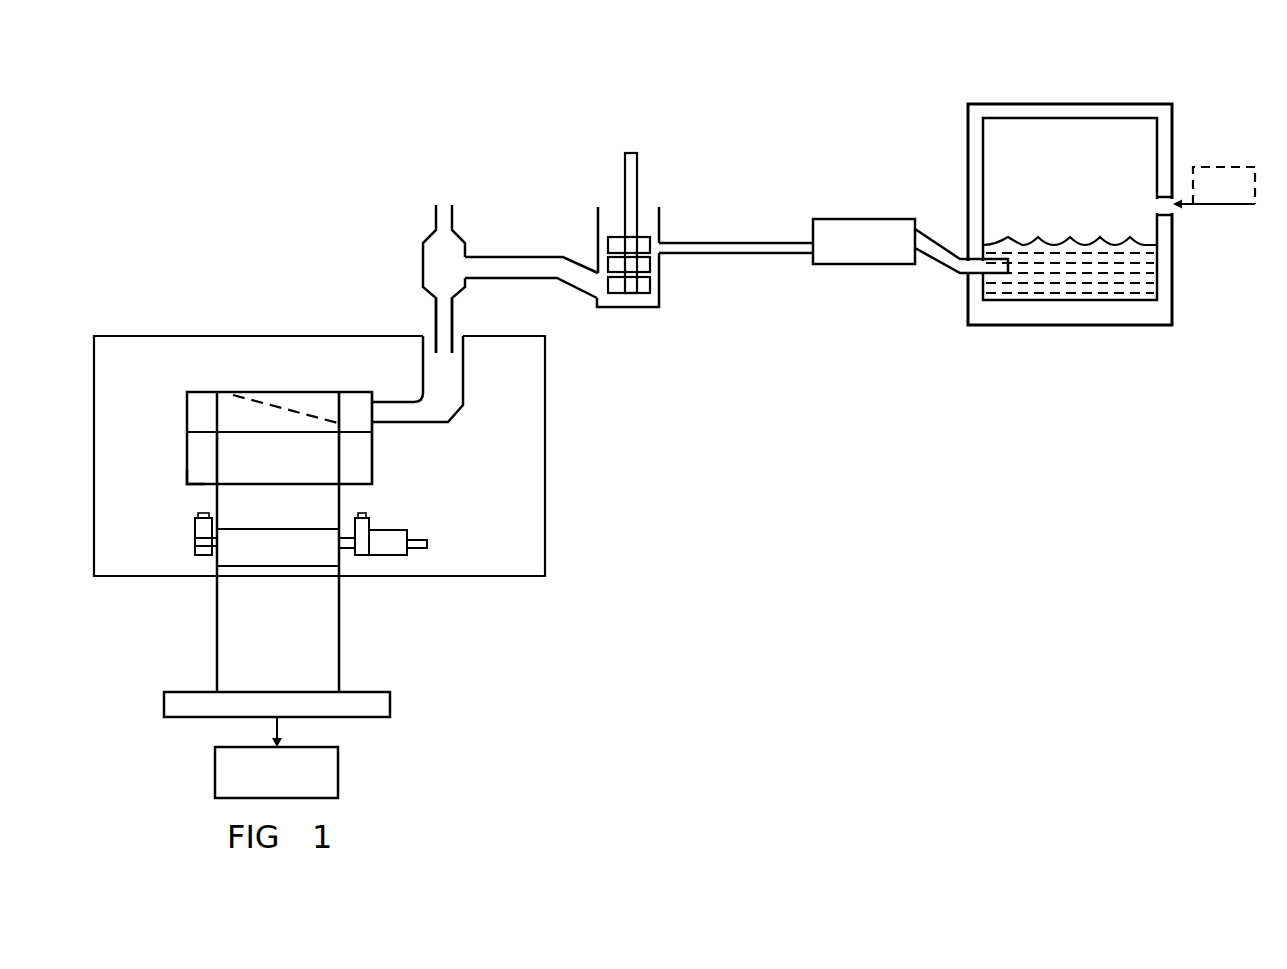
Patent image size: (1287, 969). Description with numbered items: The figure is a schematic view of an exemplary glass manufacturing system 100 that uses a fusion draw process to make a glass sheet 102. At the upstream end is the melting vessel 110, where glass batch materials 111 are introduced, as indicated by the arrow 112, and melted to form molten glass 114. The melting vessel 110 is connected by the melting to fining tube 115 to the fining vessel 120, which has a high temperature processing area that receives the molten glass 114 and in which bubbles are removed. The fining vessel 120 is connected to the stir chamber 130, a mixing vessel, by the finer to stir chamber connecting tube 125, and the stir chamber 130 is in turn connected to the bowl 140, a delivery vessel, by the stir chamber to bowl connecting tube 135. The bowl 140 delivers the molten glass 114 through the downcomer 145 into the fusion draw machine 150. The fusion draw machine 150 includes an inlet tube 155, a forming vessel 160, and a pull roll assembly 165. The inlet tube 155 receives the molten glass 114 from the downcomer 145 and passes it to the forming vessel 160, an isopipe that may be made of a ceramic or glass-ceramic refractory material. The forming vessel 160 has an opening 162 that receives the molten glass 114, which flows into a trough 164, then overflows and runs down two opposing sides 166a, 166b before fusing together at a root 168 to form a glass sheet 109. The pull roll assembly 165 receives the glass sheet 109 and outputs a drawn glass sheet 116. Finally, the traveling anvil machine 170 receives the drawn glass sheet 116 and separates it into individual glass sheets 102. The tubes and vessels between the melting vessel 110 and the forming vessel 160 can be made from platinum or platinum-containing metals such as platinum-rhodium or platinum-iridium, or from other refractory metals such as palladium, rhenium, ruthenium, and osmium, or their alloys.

The glass manufacturing system 100 is at (311, 106).
The glass sheet 102 is at (215, 772).
The glass sheet 109 is at (343, 502).
The melting vessel 110 is at (1073, 100).
The glass batch materials 111 is at (1233, 167).
The arrow 112 is at (1226, 207).
The molten glass 114 is at (1088, 243).
The melting to fining tube 115 is at (938, 241).
The drawn glass sheet 116 is at (216, 632).
The fining vessel 120 is at (862, 266).
The finer to stir chamber connecting tube 125 is at (738, 255).
The stir chamber 130 is at (600, 233).
The stir chamber to bowl connecting tube 135 is at (537, 278).
The bowl 140 is at (423, 266).
The downcomer 145 is at (436, 307).
The fusion draw machine 150 is at (160, 331).
The inlet tube 155 is at (458, 412).
The forming vessel 160 is at (187, 413).
The opening 162 is at (374, 424).
The trough 164 is at (293, 400).
The pull roll assembly 165 is at (195, 535).
The opposing side 166a is at (365, 462).
The opposing side 166b is at (187, 458).
The root 168 is at (197, 486).
The traveling anvil machine 170 is at (164, 703).